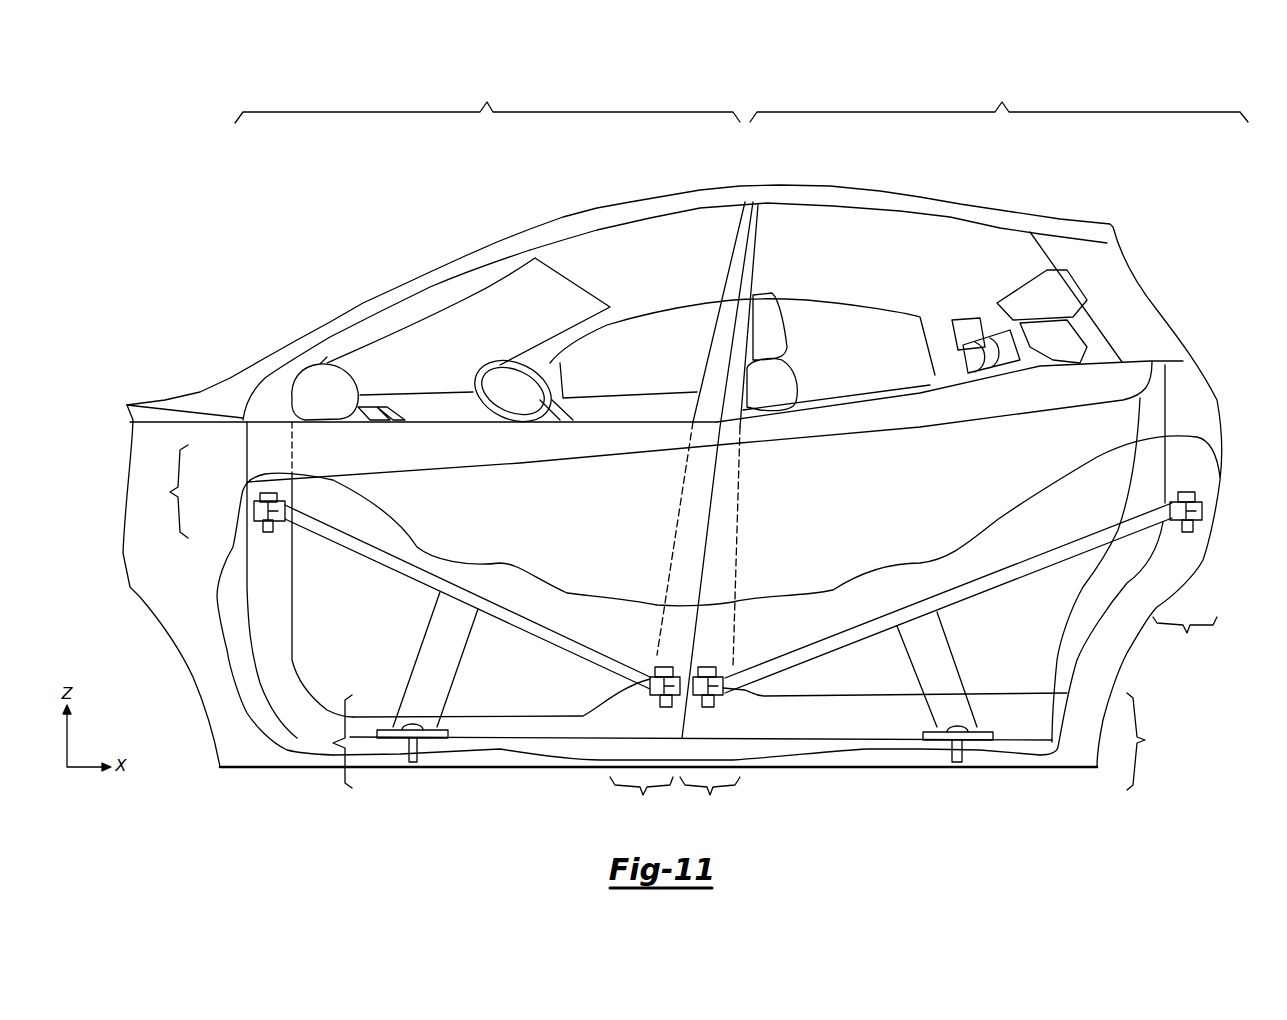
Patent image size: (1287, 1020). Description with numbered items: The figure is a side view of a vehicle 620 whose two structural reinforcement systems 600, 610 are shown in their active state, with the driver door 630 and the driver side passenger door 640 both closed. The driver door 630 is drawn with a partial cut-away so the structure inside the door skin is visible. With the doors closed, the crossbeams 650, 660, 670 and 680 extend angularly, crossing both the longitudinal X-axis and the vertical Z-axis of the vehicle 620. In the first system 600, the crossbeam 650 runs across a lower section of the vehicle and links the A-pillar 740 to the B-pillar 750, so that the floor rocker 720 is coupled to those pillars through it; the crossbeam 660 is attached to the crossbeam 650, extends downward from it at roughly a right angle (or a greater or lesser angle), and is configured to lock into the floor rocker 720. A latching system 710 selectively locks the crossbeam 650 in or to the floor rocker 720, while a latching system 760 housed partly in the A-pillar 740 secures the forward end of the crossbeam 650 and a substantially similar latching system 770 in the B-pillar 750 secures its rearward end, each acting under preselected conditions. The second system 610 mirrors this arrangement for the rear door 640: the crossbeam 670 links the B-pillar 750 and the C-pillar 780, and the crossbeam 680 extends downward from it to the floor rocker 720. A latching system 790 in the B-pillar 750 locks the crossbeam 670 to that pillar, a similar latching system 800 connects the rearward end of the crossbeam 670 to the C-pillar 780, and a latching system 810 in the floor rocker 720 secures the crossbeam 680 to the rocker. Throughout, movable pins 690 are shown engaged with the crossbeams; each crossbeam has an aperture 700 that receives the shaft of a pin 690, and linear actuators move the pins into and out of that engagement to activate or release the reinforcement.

The structural reinforcement system 600 is at (487, 98).
The second structural reinforcement system 610 is at (999, 98).
The vehicle 620 is at (138, 373).
The driver door 630 is at (519, 528).
The driver side passenger door 640 is at (874, 501).
The crossbeam 650 is at (385, 556).
The crossbeam 660 is at (437, 660).
The crossbeam 670 is at (1083, 543).
The crossbeam 680 is at (930, 650).
The movable pin 690 is at (264, 495).
The aperture 700 is at (287, 509).
The latching system 710 is at (290, 740).
The floor rocker 720 is at (497, 759).
The A-pillar 740 is at (402, 291).
The B-pillar 750 is at (738, 262).
The latching system 760 is at (162, 491).
The latching system 770 is at (641, 799).
The C-pillar 780 is at (1113, 282).
The latching system 790 is at (710, 799).
The latching system 800 is at (1185, 641).
The latching system 810 is at (1154, 741).